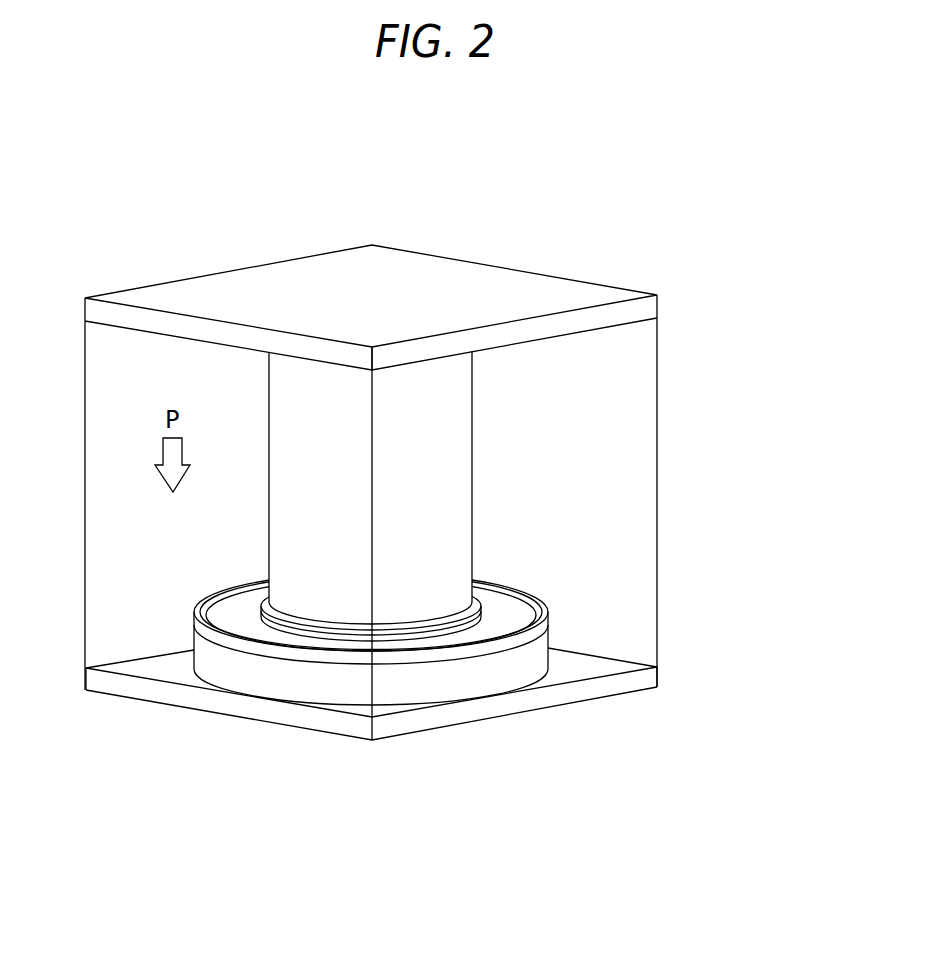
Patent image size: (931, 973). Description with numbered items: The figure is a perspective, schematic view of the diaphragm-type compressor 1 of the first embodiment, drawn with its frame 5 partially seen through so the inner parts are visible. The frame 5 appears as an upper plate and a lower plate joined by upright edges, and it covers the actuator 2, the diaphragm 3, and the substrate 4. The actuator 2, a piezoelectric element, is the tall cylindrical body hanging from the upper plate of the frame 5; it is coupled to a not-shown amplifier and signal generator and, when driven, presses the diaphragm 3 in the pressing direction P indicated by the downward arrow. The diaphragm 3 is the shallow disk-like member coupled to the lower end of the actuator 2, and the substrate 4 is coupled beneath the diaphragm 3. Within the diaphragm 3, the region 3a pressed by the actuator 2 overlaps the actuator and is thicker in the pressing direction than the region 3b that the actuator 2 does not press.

The diaphragm-type compressor 1 is at (698, 208).
The actuator 2 is at (428, 398).
The diaphragm 3 is at (542, 627).
The region pressed by the actuator 3a is at (290, 632).
The region not pressed by the actuator 3b is at (490, 620).
The substrate 4 is at (532, 657).
The frame 5 is at (200, 290).